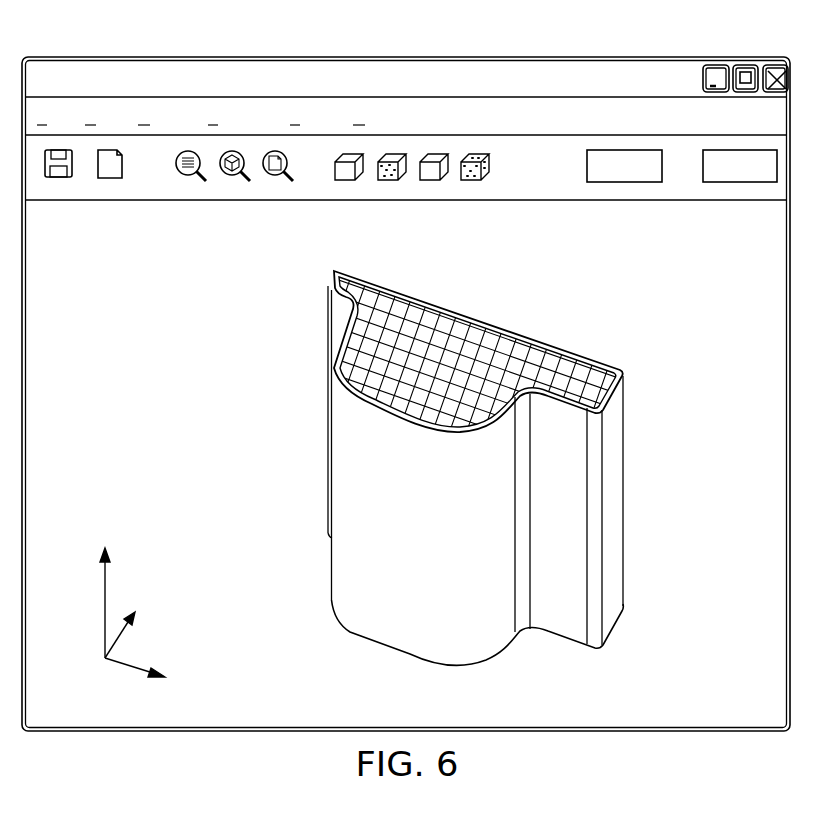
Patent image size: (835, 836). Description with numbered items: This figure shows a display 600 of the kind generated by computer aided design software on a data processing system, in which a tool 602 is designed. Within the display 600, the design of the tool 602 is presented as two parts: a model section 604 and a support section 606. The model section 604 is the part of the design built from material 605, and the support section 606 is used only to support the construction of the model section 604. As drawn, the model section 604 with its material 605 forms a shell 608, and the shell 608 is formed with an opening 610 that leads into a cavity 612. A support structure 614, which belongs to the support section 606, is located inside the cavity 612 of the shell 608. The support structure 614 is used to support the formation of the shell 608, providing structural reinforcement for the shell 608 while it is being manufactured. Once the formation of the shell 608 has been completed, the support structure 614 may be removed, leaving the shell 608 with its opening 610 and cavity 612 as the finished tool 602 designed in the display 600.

The display 600 is at (707, 53).
The tool 602 is at (490, 451).
The model section 604 is at (495, 351).
The material 605 is at (565, 465).
The support section 606 is at (350, 612).
The shell 608 is at (623, 582).
The opening 610 is at (545, 352).
The cavity 612 is at (485, 401).
The support structure 614 is at (388, 295).